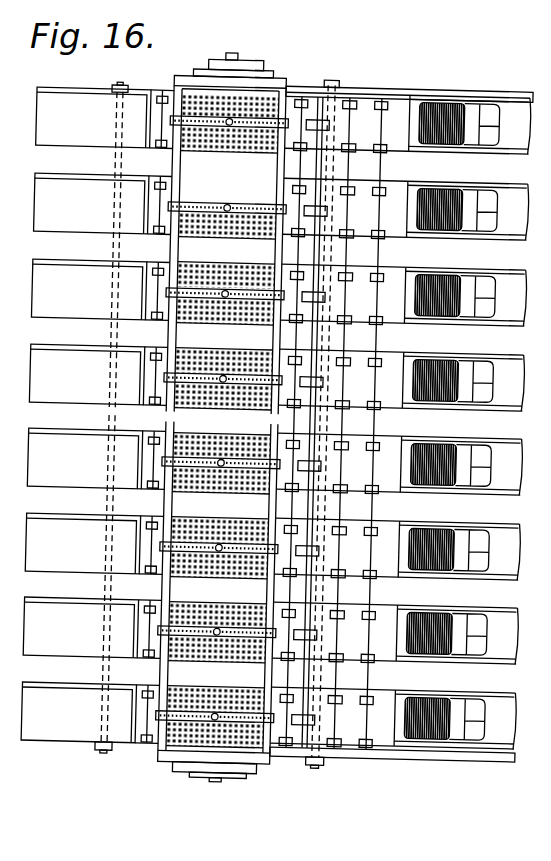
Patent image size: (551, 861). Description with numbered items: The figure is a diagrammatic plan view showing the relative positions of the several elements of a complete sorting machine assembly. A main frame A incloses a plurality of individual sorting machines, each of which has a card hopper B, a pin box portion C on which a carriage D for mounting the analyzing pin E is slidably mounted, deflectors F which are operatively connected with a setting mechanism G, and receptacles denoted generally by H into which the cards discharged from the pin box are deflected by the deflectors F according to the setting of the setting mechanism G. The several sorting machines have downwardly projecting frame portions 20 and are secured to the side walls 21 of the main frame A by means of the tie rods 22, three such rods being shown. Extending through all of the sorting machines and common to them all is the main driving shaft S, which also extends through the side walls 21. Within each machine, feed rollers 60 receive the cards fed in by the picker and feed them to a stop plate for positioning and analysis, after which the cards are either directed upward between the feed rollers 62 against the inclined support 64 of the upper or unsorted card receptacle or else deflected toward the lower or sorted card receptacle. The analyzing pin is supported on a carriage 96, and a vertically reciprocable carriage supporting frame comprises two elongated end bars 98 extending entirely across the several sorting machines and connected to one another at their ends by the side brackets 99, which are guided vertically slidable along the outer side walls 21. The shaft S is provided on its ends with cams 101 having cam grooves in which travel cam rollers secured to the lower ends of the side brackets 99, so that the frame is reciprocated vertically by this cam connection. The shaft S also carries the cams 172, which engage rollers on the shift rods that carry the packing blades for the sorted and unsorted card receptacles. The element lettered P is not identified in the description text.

The cam 101 is at (180, 77).
The main driving shaft S is at (224, 54).
The cam 172 is at (252, 61).
The side bracket 99 is at (279, 80).
The downwardly projecting frame portion 20 is at (355, 86).
The side wall 21 is at (396, 87).
The inclined support 64 is at (461, 116).
The receptacles H is at (419, 179).
The card hopper B is at (97, 415).
The feed rollers 60 is at (152, 229).
The pin box portion C is at (220, 203).
The carriage D is at (241, 205).
The plate P is at (305, 203).
The feed rollers 62 is at (343, 188).
The carriage 96 is at (226, 215).
The end bar 98 is at (167, 589).
The setting mechanism G is at (193, 702).
The analyzing pin E is at (226, 714).
The deflectors F is at (304, 712).
The tie rod 22 is at (112, 757).
The main frame A is at (384, 756).